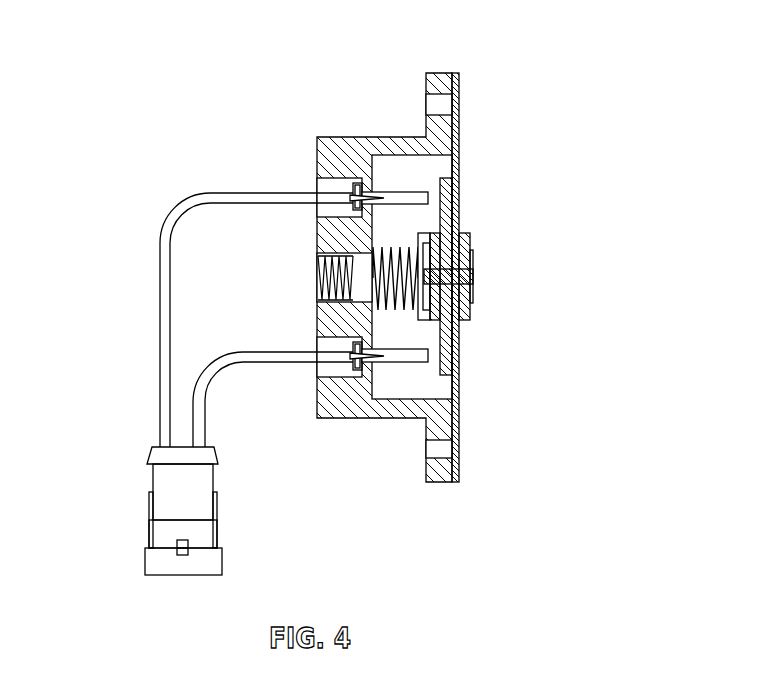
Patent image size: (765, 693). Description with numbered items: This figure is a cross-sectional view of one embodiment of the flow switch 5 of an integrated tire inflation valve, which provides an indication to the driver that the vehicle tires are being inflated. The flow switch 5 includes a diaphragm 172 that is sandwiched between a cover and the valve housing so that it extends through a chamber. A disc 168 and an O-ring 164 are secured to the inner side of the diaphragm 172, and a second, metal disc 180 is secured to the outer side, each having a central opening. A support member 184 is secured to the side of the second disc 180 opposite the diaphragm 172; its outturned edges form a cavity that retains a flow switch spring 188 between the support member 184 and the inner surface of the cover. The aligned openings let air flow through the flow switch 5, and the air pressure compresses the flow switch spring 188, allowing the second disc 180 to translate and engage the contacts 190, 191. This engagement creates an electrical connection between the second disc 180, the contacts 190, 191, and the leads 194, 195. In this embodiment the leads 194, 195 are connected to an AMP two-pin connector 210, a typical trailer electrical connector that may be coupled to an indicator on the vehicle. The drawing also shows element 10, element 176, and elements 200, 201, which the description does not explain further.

The flow switch 5 is at (128, 106).
The threaded fastener 10 is at (318, 279).
The O-ring 164 is at (473, 263).
The disc 168 is at (463, 238).
The diaphragm 172 is at (456, 148).
The pin 176 is at (471, 279).
The second disc 180 is at (447, 366).
The support member 184 is at (397, 363).
The flow switch spring 188 is at (402, 250).
The contact 190 is at (415, 195).
The contact 191 is at (416, 308).
The lead 194 is at (228, 195).
The lead 195 is at (231, 358).
The upper terminal 200 is at (321, 186).
The lower terminal 201 is at (320, 371).
The AMP 2 pin connector 210 is at (157, 578).